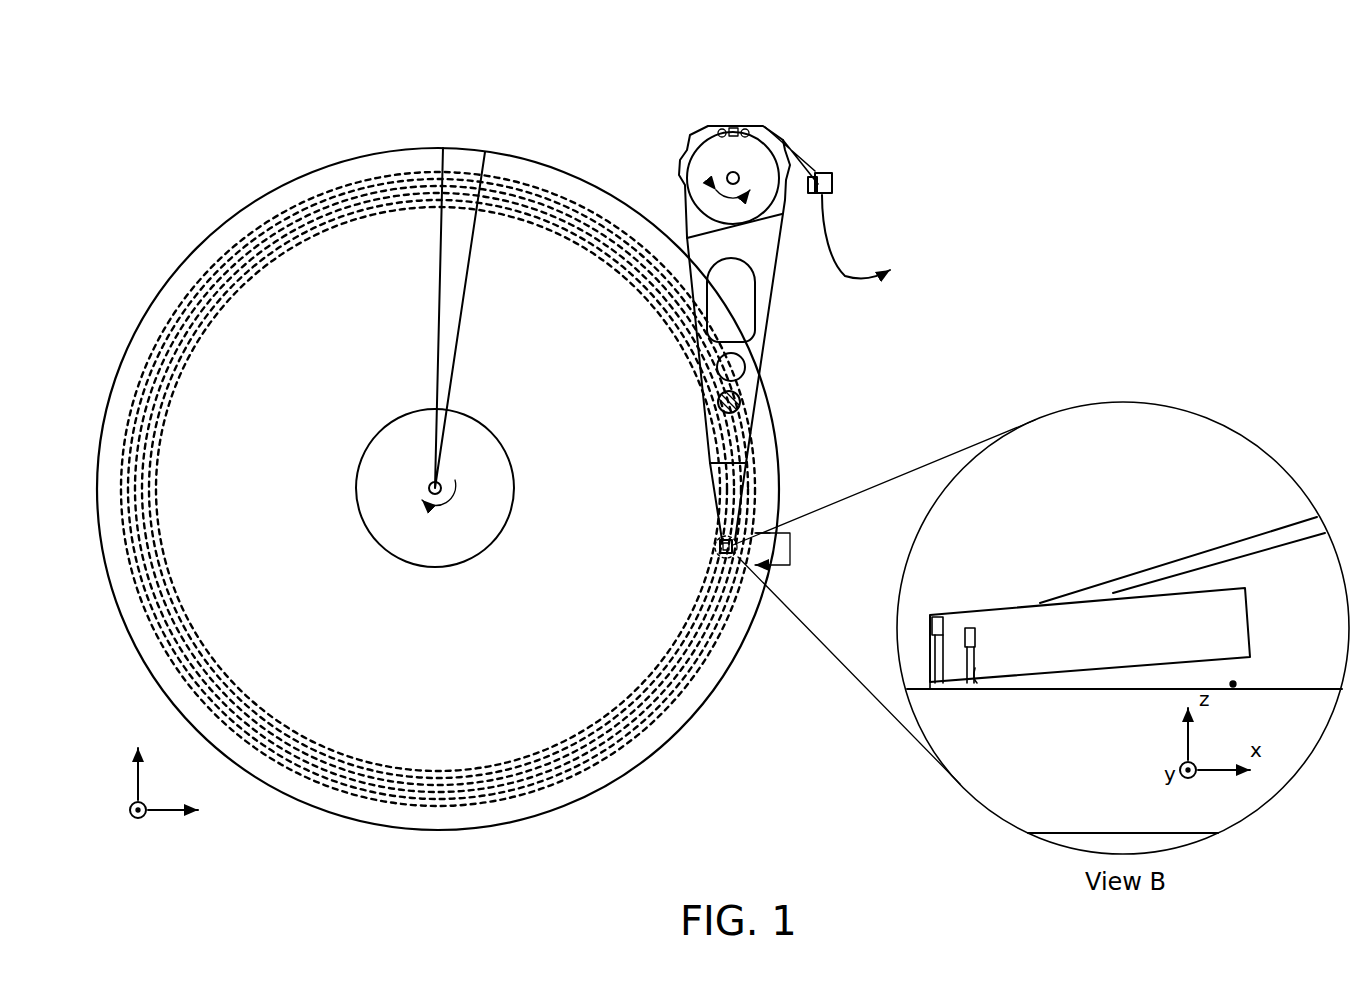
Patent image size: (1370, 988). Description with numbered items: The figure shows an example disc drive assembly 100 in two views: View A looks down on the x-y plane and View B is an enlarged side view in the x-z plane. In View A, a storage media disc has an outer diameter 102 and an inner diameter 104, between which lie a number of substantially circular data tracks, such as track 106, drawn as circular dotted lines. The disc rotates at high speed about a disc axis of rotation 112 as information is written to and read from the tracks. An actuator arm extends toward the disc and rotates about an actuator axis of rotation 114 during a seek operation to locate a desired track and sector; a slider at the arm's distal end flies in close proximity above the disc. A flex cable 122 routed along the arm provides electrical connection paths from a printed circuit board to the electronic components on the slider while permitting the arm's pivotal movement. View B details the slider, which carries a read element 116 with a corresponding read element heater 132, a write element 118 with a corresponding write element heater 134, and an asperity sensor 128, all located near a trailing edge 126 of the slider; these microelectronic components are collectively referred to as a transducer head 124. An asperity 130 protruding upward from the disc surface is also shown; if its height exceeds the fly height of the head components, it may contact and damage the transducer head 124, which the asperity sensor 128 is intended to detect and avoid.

The disc drive assembly 100 is at (194, 96).
The outer diameter 102 is at (518, 156).
The inner diameter 104 is at (430, 410).
The data track 106 is at (310, 196).
The disc axis of rotation 112 is at (443, 497).
The actuator axis of rotation 114 is at (733, 178).
The read element 116 is at (975, 668).
The write element 118 is at (935, 642).
The flex cable 122 is at (838, 277).
The transducer head 124 is at (938, 586).
The trailing edge 126 is at (927, 687).
The asperity sensor 128 is at (963, 662).
The asperity 130 is at (1233, 684).
The read element heater 132 is at (975, 630).
The write element heater 134 is at (945, 620).